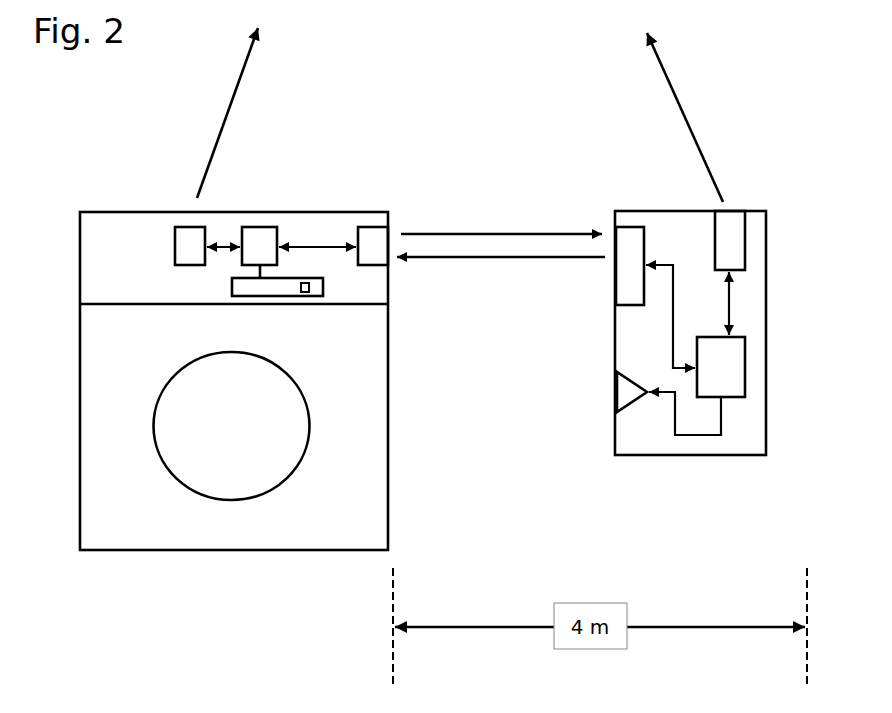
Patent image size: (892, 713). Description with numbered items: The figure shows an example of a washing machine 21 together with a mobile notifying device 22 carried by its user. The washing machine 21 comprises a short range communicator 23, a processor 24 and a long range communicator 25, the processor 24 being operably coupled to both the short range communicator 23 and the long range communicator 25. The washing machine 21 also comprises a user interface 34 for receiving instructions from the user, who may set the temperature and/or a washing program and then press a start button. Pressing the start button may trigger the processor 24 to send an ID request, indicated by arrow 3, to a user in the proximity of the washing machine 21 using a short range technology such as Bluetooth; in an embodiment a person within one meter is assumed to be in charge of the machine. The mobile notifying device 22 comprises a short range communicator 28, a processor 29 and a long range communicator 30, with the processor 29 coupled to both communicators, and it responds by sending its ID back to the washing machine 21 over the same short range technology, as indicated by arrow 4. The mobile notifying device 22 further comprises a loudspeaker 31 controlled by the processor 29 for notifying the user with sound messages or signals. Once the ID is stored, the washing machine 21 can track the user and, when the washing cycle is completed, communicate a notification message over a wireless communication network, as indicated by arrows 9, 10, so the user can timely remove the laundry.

The arrow indicating ID request 3 is at (507, 233).
The arrow indicating returned ID 4 is at (518, 257).
The arrow indicating notification message communication 9 is at (223, 117).
The arrow indicating notification message communication 10 is at (702, 147).
The washing machine 21 is at (389, 448).
The mobile notifying device 22 is at (613, 445).
The short range communicator 23 is at (372, 227).
The processor 24 is at (258, 227).
The long range communicator 25 is at (182, 227).
The short range communicator 28 is at (617, 280).
The processor 29 is at (745, 380).
The long range communicator 30 is at (745, 248).
The loudspeaker 31 is at (620, 390).
The user interface 34 is at (278, 296).